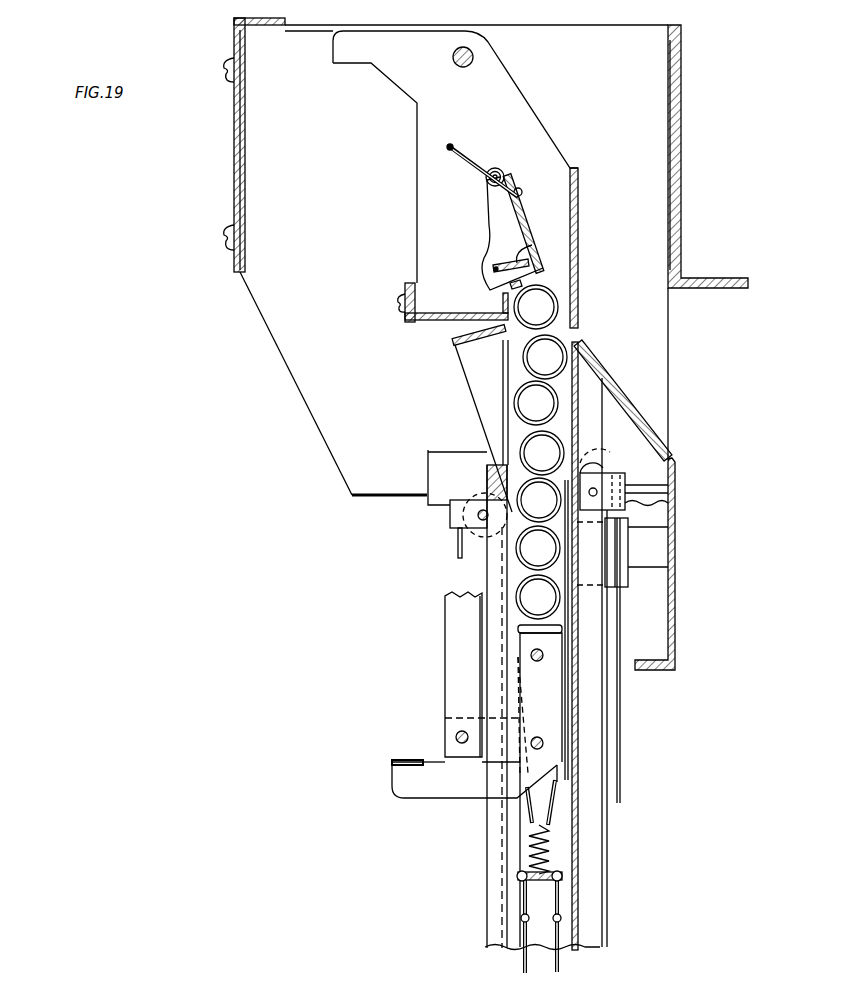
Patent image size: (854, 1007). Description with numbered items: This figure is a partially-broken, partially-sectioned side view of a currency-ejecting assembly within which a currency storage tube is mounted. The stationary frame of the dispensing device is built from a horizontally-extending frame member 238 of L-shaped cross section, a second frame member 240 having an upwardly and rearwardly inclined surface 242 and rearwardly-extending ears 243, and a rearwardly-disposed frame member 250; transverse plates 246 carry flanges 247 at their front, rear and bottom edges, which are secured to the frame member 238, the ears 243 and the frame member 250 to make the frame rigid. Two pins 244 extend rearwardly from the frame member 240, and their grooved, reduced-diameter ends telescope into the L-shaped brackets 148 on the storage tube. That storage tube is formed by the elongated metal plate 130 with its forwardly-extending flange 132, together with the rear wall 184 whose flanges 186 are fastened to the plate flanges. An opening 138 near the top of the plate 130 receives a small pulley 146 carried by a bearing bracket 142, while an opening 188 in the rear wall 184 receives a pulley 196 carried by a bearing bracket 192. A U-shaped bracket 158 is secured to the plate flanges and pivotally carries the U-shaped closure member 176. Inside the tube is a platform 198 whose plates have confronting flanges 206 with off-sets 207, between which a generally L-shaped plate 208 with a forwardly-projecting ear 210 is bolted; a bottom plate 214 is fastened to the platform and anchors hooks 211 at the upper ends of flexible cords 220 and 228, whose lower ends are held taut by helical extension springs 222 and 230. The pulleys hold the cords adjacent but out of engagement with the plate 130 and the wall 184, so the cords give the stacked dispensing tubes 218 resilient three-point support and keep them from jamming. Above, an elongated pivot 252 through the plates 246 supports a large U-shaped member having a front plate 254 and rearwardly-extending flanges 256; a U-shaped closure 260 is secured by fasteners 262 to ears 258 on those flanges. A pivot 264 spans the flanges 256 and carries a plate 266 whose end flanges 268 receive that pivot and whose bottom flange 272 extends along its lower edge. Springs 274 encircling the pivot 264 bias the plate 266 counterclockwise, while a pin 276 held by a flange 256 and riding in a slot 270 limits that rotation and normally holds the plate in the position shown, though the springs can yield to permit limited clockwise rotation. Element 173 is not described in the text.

The metal plate 130 is at (507, 400).
The forwardly-extending flange 132 is at (488, 920).
The opening 138 is at (487, 481).
The bearing bracket 142 is at (450, 520).
The small pulley 146 is at (470, 535).
The L-shaped bracket 148 is at (629, 527).
The U-shaped bracket 158 is at (428, 456).
The plate 173 is at (451, 655).
The U-shaped closure member 176 is at (468, 362).
The rear wall 184 is at (578, 382).
The flange 186 is at (588, 926).
The opening 188 is at (604, 456).
The bearing bracket 192 is at (626, 481).
The small pulley 196 is at (614, 477).
The platform 198 is at (559, 783).
The vertically-directed flange 206 is at (543, 702).
The off-set 207 is at (462, 765).
The L-shaped plate 208 is at (494, 683).
The horizontally-directed ear 210 is at (400, 760).
The hook 211 is at (556, 897).
The bottom plate 214 is at (562, 874).
The dispensing tube 218 is at (559, 308).
The flexible cord 220 is at (492, 980).
The helical extension spring 222 is at (536, 839).
The flexible cord 228 is at (569, 593).
The helical extension spring 230 is at (548, 847).
The frame member 238 is at (683, 203).
The frame member 240 is at (677, 657).
The inclined surface 242 is at (645, 422).
The ear 243 is at (657, 489).
The pin 244 is at (647, 564).
The plate 246 is at (320, 403).
The flange 247 is at (241, 157).
The frame member 250 is at (236, 165).
The pivot 252 is at (472, 53).
The front plate 254 is at (579, 216).
The flange 256 is at (425, 190).
The ear 258 is at (416, 291).
The U-shaped closure 260 is at (443, 323).
The fastener 262 is at (401, 306).
The pivot 264 is at (505, 168).
The plate 266 is at (528, 216).
The flange 268 is at (502, 233).
The slot 270 is at (528, 247).
The bottom flange 272 is at (541, 270).
The spring 274 is at (470, 163).
The pin 276 is at (493, 272).